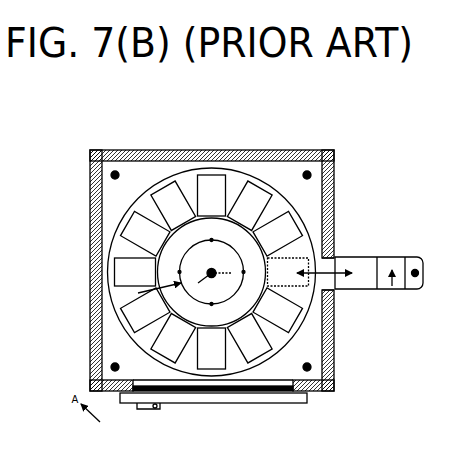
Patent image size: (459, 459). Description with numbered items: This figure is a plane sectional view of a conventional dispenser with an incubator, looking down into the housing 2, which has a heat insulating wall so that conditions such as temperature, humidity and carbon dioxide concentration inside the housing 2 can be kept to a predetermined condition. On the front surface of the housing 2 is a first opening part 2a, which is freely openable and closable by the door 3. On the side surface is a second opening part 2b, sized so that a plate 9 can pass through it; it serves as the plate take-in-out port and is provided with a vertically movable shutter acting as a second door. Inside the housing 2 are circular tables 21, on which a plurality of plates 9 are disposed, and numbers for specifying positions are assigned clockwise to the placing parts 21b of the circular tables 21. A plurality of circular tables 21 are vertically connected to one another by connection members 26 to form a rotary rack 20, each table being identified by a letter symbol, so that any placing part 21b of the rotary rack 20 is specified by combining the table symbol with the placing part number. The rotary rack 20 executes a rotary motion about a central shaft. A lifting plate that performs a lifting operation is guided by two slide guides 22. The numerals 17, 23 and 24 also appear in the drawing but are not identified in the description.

The frame 2 is at (336, 157).
The bottom portion of frame 2a is at (178, 389).
The opening in frame side wall 2b is at (331, 257).
The base plate 3 is at (253, 399).
The coil 9 is at (168, 193).
The screw 17 is at (415, 257).
The motor 20 is at (280, 166).
The stator core 21 is at (233, 171).
The stator core hub ring 21b is at (298, 223).
The fixing screw 22 is at (114, 170).
The fixing screw 23 is at (309, 171).
The rotor 24 is at (212, 268).
The rotor shaft 26 is at (213, 277).